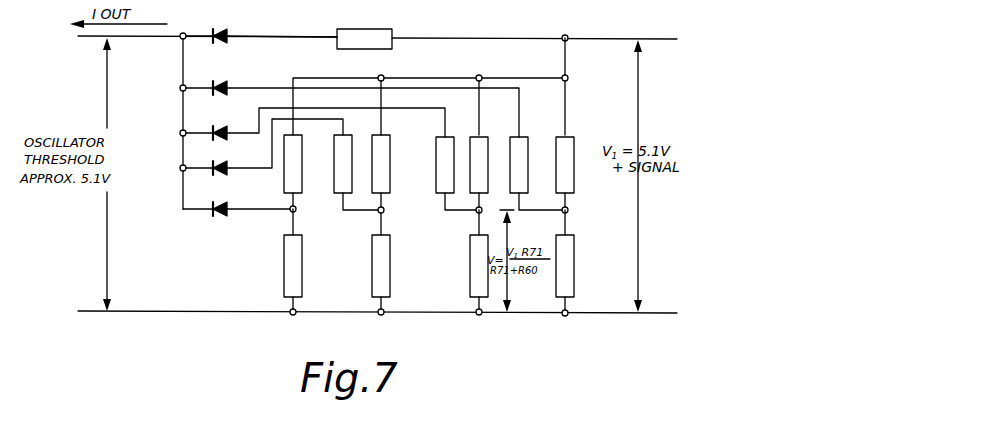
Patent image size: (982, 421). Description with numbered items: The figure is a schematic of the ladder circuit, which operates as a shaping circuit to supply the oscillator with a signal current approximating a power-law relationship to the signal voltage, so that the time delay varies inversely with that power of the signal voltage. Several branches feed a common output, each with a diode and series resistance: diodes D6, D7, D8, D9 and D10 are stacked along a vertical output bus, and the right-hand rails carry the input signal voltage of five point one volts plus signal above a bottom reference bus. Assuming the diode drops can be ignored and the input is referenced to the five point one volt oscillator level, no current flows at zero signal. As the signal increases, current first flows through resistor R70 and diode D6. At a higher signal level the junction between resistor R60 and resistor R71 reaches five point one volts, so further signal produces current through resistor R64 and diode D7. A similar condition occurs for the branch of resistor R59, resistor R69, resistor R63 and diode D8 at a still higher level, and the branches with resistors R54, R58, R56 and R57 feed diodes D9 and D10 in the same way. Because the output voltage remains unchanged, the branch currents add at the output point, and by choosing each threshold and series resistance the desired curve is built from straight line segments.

The diode D6 is at (222, 28).
The diode D7 is at (221, 80).
The diode D8 is at (221, 126).
The diode D9 is at (216, 175).
The diode D10 is at (214, 217).
The resistor R54 is at (350, 141).
The resistor R56 is at (299, 189).
The resistor R57 is at (284, 266).
The resistor R58 is at (392, 141).
The resistor R59 is at (485, 143).
The resistor R60 is at (573, 143).
The resistor R63 is at (438, 191).
The resistor R64 is at (527, 143).
The resistor R69 is at (470, 268).
The resistor R70 is at (364, 39).
The resistor R71 is at (574, 258).